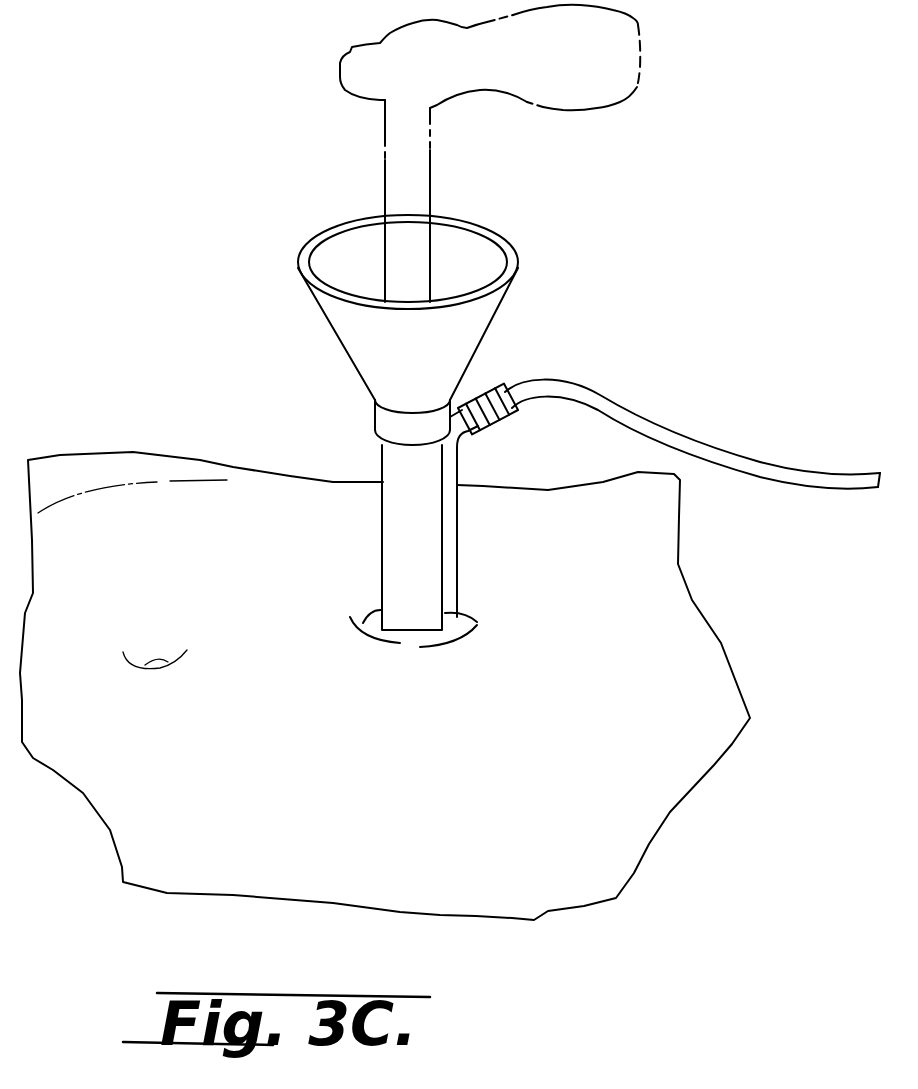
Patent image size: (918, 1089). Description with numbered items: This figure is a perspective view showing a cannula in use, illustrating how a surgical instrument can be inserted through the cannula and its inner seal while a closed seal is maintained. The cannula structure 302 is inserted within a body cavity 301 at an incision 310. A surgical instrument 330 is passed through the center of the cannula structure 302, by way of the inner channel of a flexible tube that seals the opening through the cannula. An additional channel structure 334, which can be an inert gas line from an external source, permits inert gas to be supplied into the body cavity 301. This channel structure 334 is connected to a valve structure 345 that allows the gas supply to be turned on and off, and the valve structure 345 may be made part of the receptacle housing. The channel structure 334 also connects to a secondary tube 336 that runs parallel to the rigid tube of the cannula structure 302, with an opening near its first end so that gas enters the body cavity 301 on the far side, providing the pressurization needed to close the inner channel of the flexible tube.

The body cavity 301 is at (475, 778).
The cannula structure 302 is at (377, 438).
The incision 310 is at (360, 622).
The surgical instrument 330 is at (420, 187).
The additional channel structure 334 is at (653, 417).
The secondary tube 336 is at (456, 594).
The valve structure 345 is at (483, 393).